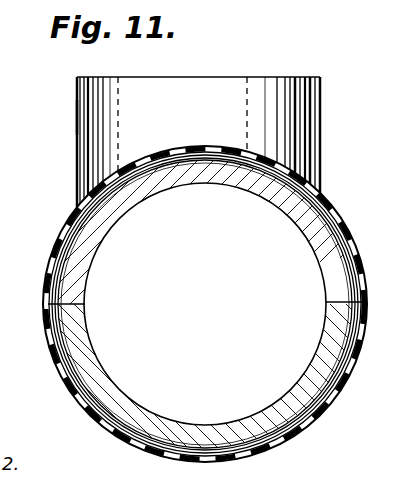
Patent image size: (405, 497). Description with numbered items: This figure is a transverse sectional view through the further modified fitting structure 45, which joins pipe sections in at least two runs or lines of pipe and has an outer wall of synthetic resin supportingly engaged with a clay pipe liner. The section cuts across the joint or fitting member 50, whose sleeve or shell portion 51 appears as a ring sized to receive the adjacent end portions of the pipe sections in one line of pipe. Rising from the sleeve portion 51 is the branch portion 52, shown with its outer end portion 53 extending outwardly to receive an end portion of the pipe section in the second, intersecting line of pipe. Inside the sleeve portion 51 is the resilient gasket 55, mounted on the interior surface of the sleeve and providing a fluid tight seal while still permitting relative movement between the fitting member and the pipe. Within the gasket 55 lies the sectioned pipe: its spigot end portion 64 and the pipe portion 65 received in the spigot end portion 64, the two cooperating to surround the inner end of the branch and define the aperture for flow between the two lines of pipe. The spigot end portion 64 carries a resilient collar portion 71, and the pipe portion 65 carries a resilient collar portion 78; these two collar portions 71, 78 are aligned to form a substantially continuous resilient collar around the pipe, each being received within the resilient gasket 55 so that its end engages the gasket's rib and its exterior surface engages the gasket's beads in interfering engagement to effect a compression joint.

The fitting structure 45 is at (337, 103).
The joint or fitting member 50 is at (328, 198).
The sleeve or shell portion 51 is at (360, 276).
The branch portion 52 is at (110, 110).
The outer end portion 53 is at (217, 98).
The resilient gasket 55 is at (355, 335).
The spigot end portion 64 is at (105, 377).
The pipe portion 65 is at (95, 242).
The resilient collar portion 71 is at (328, 403).
The resilient collar portion 78 is at (330, 228).